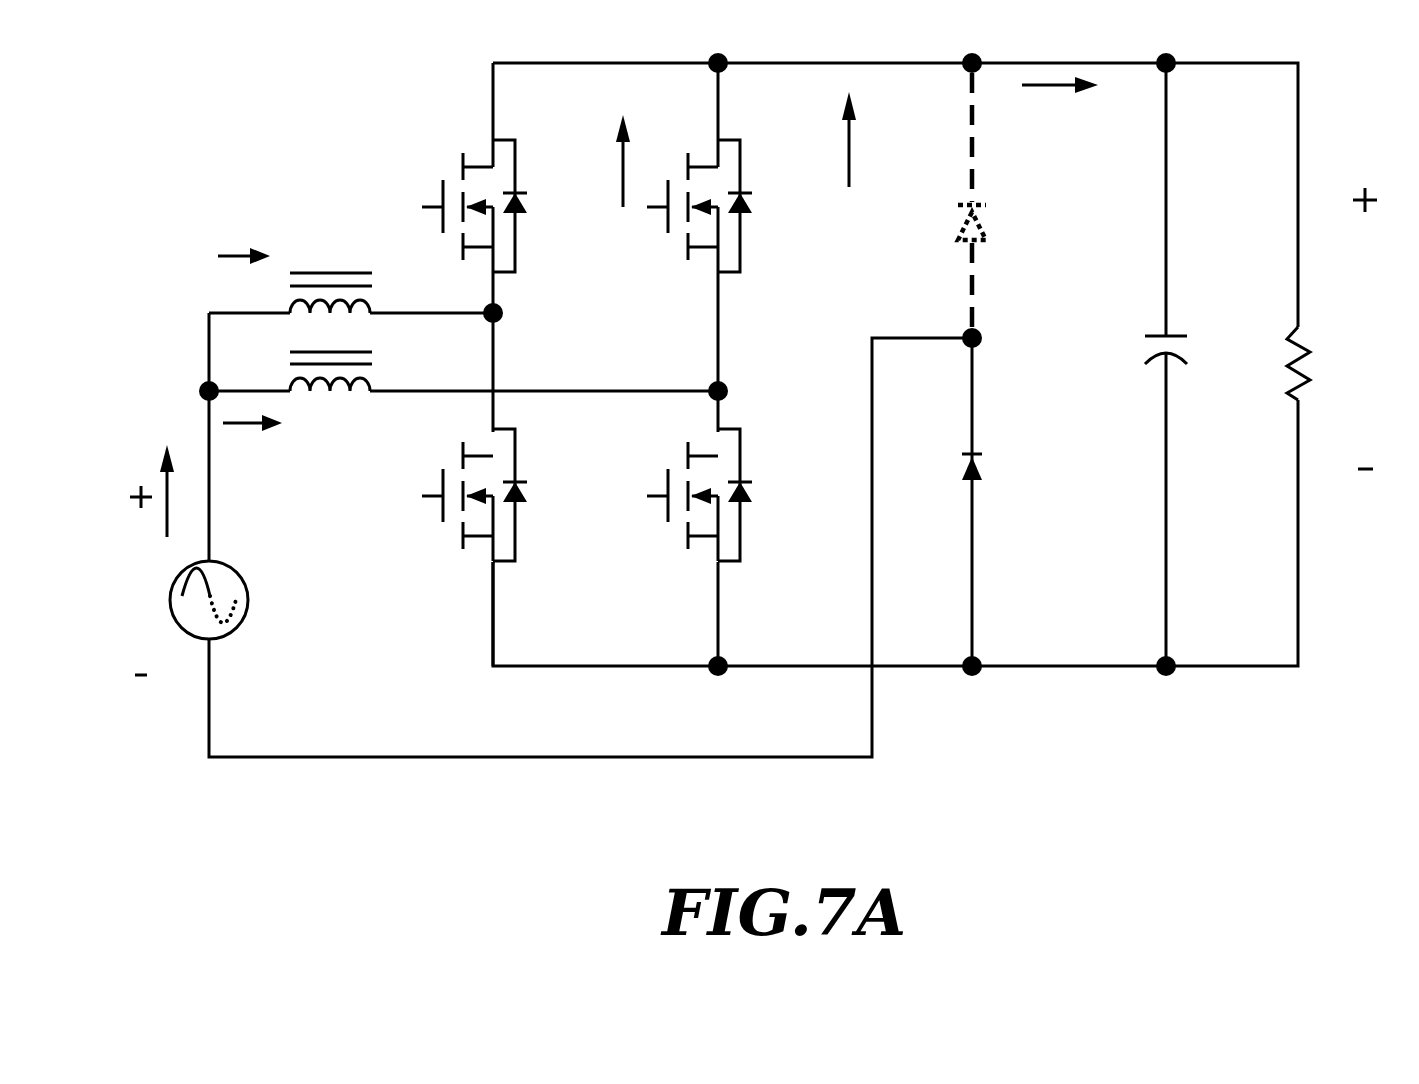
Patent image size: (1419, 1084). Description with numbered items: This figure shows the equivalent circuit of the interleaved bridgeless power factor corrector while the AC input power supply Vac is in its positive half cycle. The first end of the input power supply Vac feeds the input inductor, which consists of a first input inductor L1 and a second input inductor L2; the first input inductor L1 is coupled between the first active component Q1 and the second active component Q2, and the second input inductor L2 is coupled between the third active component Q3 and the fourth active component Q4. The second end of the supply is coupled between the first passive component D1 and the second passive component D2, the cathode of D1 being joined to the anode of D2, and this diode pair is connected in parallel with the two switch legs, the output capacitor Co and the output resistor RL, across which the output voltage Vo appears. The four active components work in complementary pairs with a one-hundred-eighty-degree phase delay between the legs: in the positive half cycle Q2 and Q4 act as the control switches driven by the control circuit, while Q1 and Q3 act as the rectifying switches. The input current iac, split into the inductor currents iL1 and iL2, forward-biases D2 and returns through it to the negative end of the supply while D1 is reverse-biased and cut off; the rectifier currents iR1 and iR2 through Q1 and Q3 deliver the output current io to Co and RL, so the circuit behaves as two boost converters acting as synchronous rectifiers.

The first input inductor L1 is at (331, 251).
The second input inductor L2 is at (331, 410).
The first active component Q1 is at (499, 206).
The second active component Q2 is at (498, 495).
The third active component Q3 is at (724, 206).
The fourth active component Q4 is at (724, 495).
The first passive component D1 is at (1005, 205).
The second passive component D2 is at (1002, 458).
The output capacitor Co is at (1136, 360).
The output resistor RL is at (1265, 367).
The input power supply Vac is at (171, 598).
The output voltage Vo is at (1363, 340).
The first inductor current iL1 is at (247, 221).
The second inductor current iL2 is at (252, 460).
The AC input current iac is at (171, 446).
The first rectifier current iR1 is at (590, 161).
The second rectifier current iR2 is at (816, 141).
The output current io is at (1060, 107).